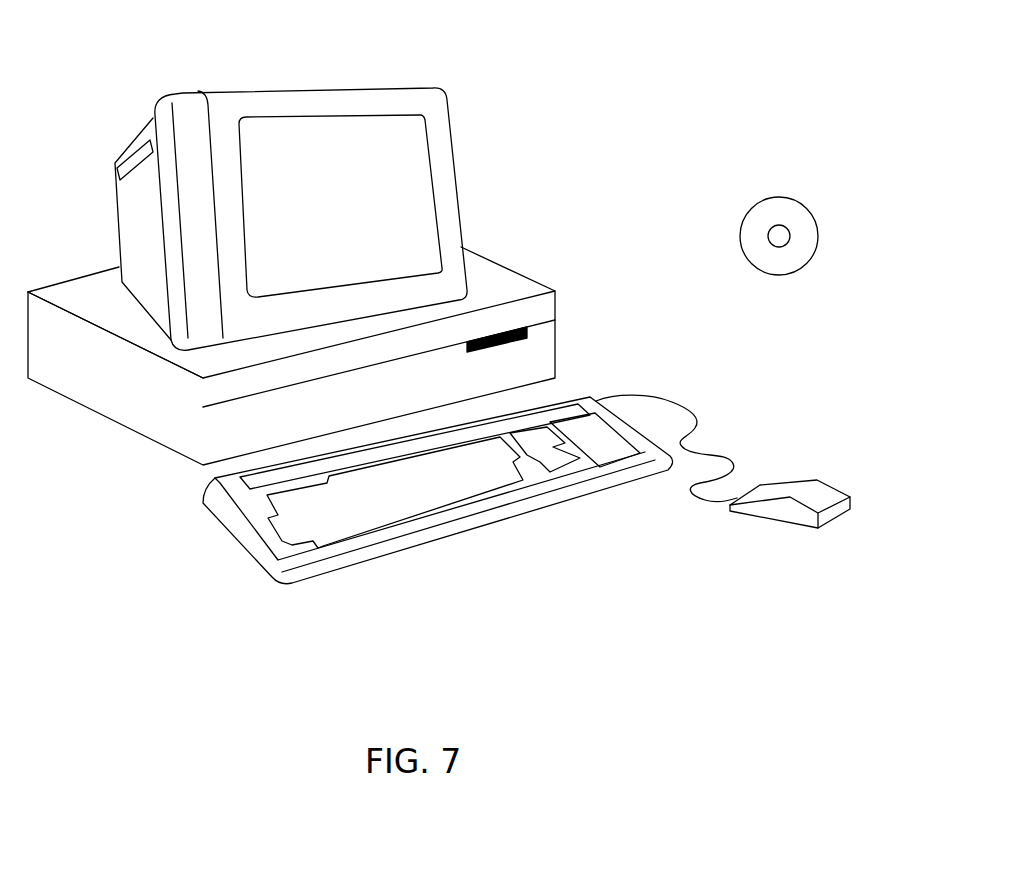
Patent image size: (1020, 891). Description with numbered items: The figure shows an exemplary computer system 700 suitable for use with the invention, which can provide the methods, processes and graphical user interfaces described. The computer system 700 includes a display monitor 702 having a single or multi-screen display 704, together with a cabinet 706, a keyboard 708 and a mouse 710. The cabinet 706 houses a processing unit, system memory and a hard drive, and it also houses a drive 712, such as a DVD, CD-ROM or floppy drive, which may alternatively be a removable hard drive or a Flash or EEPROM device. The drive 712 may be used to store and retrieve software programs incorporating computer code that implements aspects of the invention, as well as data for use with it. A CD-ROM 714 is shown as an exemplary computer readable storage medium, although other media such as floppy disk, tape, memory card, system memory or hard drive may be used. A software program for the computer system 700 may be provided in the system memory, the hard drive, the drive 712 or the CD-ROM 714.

The computer system 700 is at (697, 68).
The display monitor 702 is at (461, 212).
The display 704 is at (412, 160).
The cabinet 706 is at (158, 448).
The keyboard 708 is at (452, 540).
The mouse 710 is at (838, 481).
The drive 712 is at (527, 326).
The CD-ROM 714 is at (786, 199).